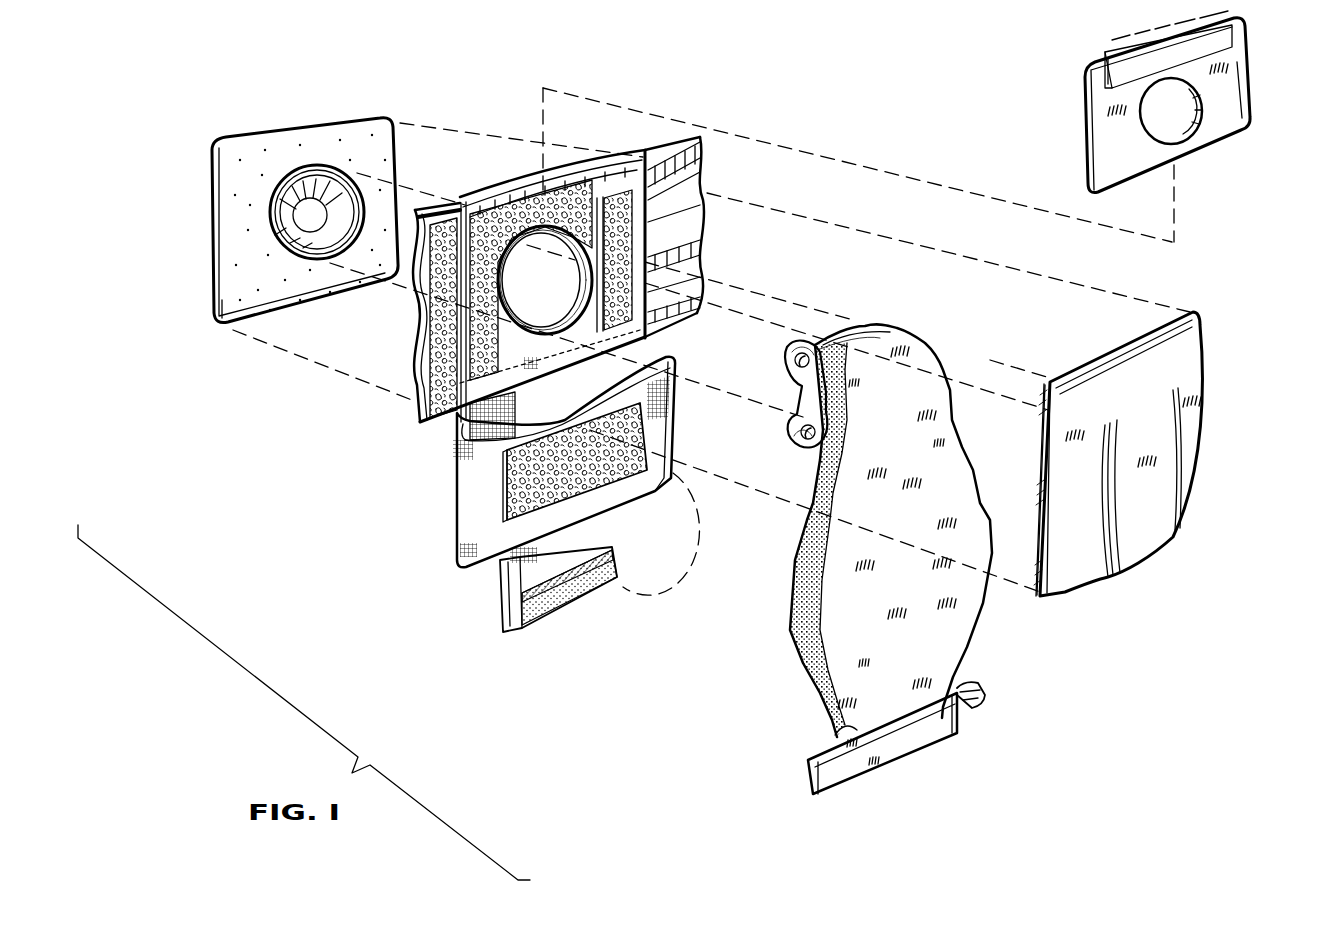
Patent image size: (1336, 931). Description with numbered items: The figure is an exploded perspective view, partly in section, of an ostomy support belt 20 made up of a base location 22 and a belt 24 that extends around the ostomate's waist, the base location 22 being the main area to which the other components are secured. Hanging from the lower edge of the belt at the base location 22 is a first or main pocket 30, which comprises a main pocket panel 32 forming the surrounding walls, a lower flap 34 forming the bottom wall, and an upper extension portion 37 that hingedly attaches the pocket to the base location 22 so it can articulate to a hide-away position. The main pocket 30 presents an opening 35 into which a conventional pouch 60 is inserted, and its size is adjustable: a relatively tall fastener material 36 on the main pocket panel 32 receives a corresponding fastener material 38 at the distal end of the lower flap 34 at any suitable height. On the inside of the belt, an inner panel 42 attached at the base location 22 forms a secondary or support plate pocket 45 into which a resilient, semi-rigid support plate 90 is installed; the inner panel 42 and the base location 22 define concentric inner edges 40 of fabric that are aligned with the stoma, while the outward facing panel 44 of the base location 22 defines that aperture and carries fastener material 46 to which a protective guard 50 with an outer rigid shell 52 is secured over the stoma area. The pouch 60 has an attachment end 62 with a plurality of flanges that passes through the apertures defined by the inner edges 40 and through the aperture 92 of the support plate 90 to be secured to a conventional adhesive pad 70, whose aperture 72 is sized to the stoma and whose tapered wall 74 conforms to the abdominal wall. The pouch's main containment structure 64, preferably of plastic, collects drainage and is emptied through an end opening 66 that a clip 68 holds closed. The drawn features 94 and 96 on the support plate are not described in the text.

The ostomy support belt 20 is at (1031, 156).
The base location 22 is at (650, 148).
The belt 24 is at (698, 207).
The main pocket 30 is at (452, 546).
The main pocket panel 32 is at (470, 520).
The lower flap 34 is at (515, 580).
The opening 35 is at (605, 382).
The fastener material 36 is at (505, 488).
The upper extension portion 37 is at (468, 412).
The fastener material 38 is at (575, 600).
The inner edges 40 is at (584, 282).
The inner panel 42 is at (540, 188).
The outward facing panel 44 is at (556, 364).
The support plate pocket 45 is at (563, 165).
The fastener material 46 is at (500, 187).
The protective guard 50 is at (1212, 364).
The outer rigid shell 52 is at (1142, 402).
The pouch 60 is at (968, 655).
The attachment end 62 is at (803, 343).
The main containment structure 64 is at (908, 439).
The end opening 66 is at (835, 728).
The clip 68 is at (920, 742).
The adhesive pad 70 is at (213, 134).
The aperture 72 is at (305, 238).
The tapered wall 74 is at (345, 222).
The support plate 90 is at (1255, 104).
The aperture 92 is at (1200, 130).
The slot 94 is at (1110, 55).
The plate face 96 is at (1232, 65).